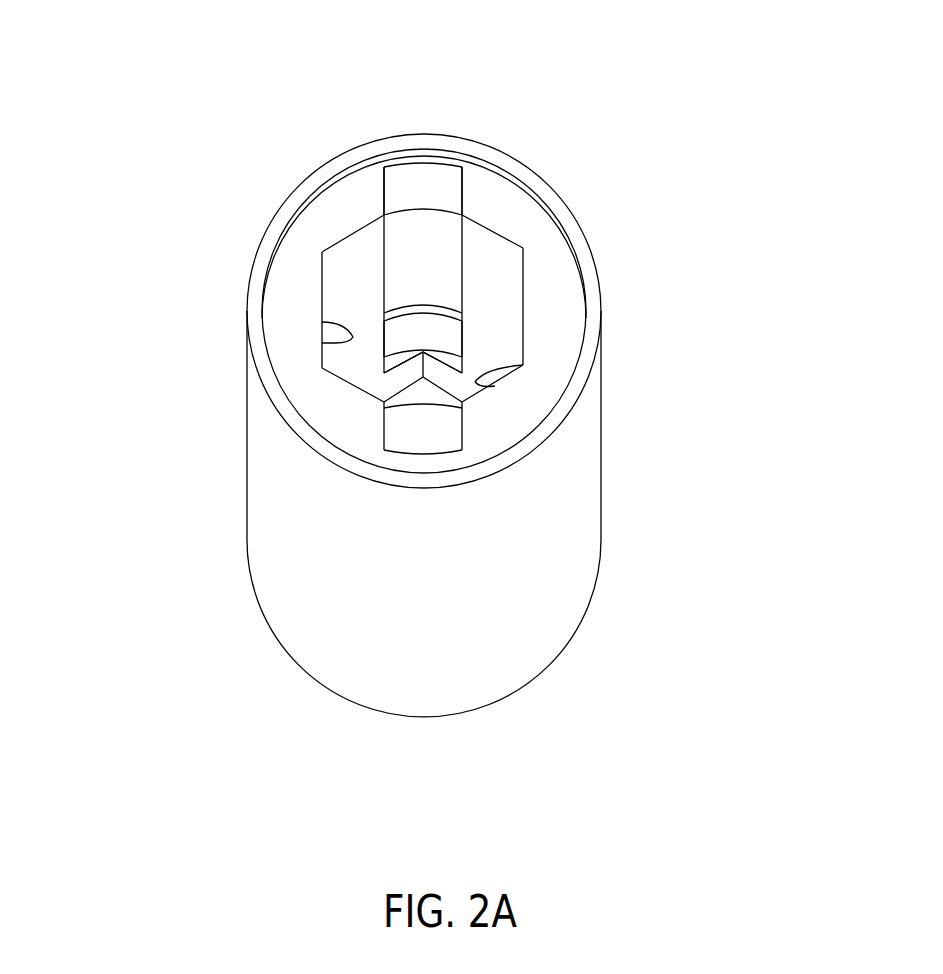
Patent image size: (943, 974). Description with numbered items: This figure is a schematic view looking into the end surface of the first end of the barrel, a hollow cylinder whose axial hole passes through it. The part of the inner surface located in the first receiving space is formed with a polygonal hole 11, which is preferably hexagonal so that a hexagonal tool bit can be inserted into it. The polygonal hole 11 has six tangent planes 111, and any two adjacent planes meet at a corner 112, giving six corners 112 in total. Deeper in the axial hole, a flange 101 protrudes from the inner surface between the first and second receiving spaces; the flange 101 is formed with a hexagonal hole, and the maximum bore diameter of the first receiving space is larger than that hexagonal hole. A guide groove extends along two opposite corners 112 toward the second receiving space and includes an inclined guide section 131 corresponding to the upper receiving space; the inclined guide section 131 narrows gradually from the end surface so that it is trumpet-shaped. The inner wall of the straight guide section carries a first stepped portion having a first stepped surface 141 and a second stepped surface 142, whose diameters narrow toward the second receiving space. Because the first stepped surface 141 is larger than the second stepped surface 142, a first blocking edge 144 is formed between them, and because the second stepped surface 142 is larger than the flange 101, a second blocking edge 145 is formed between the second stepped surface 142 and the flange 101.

The polygonal hole 11 is at (342, 223).
The flange 101 is at (403, 379).
The first stepped surface 141 is at (418, 273).
The inclined guide section 131 is at (418, 193).
The second stepped surface 142 is at (427, 325).
The first blocking edge 144 is at (402, 308).
The second blocking edge 145 is at (448, 360).
The tangent planes 111 is at (340, 343).
The corner 112 is at (495, 386).